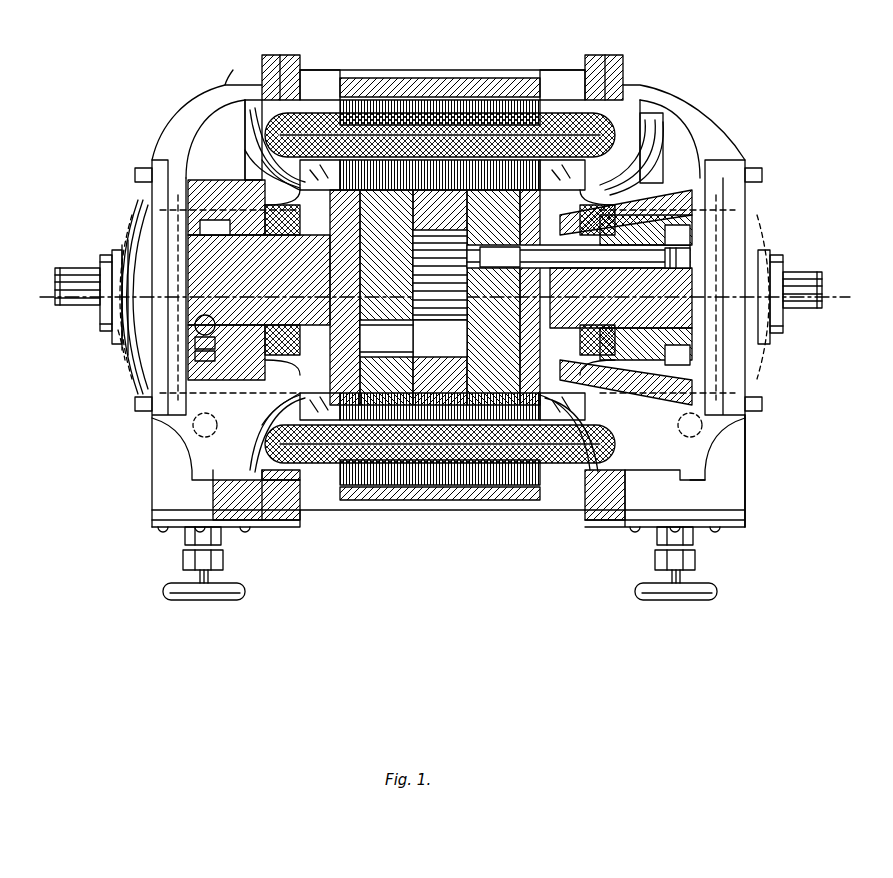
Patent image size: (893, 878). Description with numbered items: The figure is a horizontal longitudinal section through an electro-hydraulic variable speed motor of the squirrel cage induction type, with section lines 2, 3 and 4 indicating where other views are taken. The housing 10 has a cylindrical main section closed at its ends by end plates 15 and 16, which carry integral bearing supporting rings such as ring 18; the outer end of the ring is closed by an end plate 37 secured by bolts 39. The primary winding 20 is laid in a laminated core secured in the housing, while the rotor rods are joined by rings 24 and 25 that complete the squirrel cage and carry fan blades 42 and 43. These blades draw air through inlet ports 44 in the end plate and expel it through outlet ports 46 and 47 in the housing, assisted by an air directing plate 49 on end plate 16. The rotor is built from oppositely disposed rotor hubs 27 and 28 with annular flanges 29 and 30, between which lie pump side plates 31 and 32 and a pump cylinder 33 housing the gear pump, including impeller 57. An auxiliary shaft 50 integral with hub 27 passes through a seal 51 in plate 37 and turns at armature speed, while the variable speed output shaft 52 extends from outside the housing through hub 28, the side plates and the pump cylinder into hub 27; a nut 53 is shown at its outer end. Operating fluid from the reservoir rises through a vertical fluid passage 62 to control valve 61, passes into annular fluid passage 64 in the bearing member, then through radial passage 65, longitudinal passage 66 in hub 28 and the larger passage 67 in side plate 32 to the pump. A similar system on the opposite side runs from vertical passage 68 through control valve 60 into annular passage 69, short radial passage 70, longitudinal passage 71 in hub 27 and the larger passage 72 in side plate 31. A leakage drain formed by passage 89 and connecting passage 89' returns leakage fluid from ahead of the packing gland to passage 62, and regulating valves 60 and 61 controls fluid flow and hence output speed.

The section line 2- 2 is at (475, 599).
The section line 3- 3 is at (685, 644).
The section line 4- 4 is at (830, 297).
The housing 10 is at (425, 500).
The end plate 15 is at (226, 85).
The end plate 16 is at (645, 90).
The bearing supporting ring 18 is at (160, 160).
The primary winding 20 is at (566, 445).
The ring 24 is at (295, 292).
The ring 25 is at (585, 280).
The rotor hub 27 is at (165, 255).
The rotor hub 28 is at (715, 350).
The annular flange 29 is at (340, 455).
The annular flange 30 is at (512, 452).
The pump side plate 31 is at (390, 450).
The pump side plate 32 is at (490, 200).
The pump cylinder 33 is at (438, 195).
The end plate 37 is at (195, 343).
The bolts 39 is at (780, 403).
The blades 42 is at (300, 415).
The blades 43 is at (572, 410).
The air inlet ports 44 is at (195, 110).
The air outlet ports 46 is at (255, 100).
The air outlet ports 47 is at (556, 78).
The air directing plate 49 is at (645, 135).
The shaft 50 is at (80, 268).
The seal 51 is at (100, 258).
The variable speed output shaft 52 is at (808, 280).
The right shaft nut 53 is at (783, 322).
The impeller 57 is at (440, 310).
The control valve 60 is at (190, 600).
The control valve 61 is at (690, 600).
The fluid passage 62 is at (735, 428).
The annular fluid passage 64 is at (688, 356).
The radially extending passage 65 is at (690, 255).
The passage 66 is at (650, 265).
The passage 67 is at (578, 256).
The fluid passage 68 is at (155, 425).
The annular passage 69 is at (205, 228).
The short passage 70 is at (195, 356).
The passage 71 is at (195, 328).
The passage 72 is at (386, 338).
The passage 89 is at (426, 297).
The connecting passage 89' is at (426, 342).